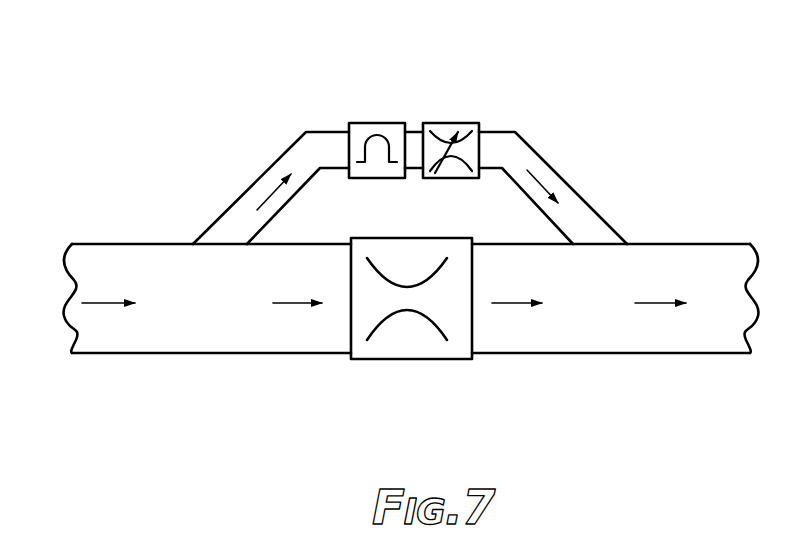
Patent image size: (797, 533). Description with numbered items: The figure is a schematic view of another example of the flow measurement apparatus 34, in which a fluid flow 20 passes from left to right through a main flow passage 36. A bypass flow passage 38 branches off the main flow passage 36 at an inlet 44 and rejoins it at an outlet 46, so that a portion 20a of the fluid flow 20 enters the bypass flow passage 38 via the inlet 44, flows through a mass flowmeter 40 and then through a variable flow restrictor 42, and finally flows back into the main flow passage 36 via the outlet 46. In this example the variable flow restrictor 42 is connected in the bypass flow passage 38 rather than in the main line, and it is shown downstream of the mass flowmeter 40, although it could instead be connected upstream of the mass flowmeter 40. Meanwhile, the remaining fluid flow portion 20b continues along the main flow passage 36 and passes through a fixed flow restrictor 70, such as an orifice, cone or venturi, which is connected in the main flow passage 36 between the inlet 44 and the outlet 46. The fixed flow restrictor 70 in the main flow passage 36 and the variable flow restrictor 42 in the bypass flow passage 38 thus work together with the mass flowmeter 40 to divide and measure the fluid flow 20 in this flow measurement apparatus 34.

The fluid flow 20 is at (107, 302).
The portion of the fluid flow 20a is at (266, 198).
The fluid flow portion 20b is at (292, 303).
The flow measurement apparatus 34 is at (692, 76).
The main flow passage 36 is at (167, 354).
The bypass flow passage 38 is at (287, 152).
The mass flowmeter 40 is at (374, 123).
The variable flow restrictor 42 is at (452, 123).
The inlet 44 is at (220, 238).
The outlet 46 is at (595, 240).
The fixed flow restrictor 70 is at (445, 359).